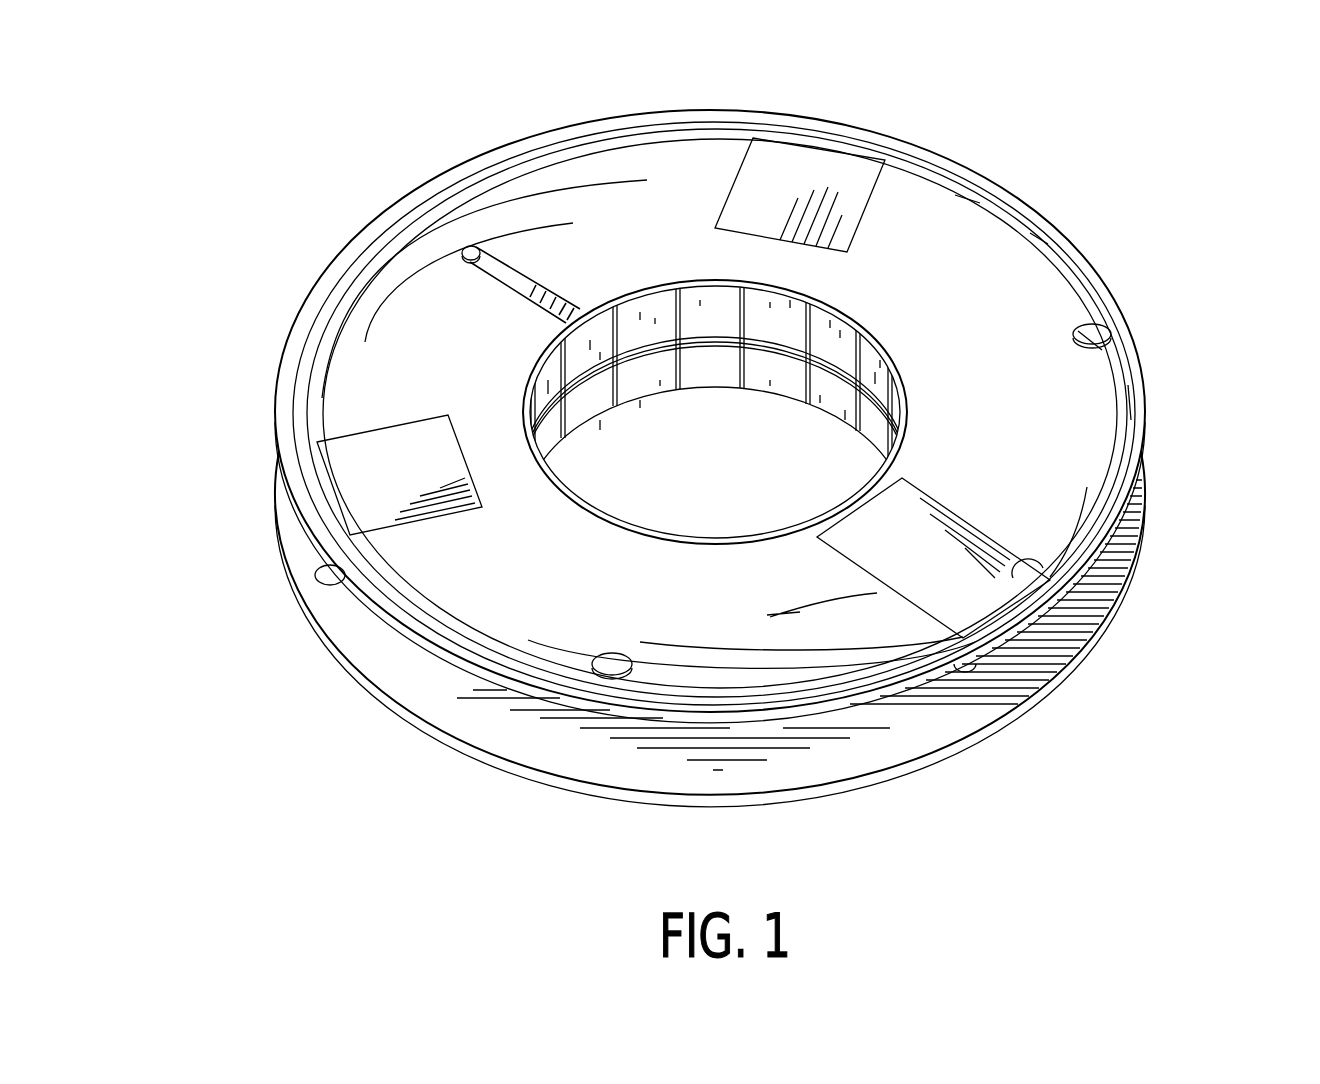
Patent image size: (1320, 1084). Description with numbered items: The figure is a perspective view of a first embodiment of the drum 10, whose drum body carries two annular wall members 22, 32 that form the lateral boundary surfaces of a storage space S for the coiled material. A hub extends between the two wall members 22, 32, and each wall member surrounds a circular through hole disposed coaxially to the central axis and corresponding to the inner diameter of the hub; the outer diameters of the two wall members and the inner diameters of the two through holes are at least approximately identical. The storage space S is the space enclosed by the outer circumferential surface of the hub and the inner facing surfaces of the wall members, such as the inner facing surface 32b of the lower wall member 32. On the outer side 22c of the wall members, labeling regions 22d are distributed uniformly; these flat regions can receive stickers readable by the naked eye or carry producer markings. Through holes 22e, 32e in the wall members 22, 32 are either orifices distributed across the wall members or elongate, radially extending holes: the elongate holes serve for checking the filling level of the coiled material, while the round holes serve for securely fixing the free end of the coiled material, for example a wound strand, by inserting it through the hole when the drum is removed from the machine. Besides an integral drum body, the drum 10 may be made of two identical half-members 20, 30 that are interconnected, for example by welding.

The drum 10 is at (365, 148).
The half-member 20 is at (1067, 160).
The annular wall member 22 is at (1062, 270).
The outer side 22c is at (740, 697).
The labeling regions 22d is at (818, 168).
The through holes 22e is at (1096, 330).
The half-member 30 is at (972, 770).
The annular wall member 32 is at (1068, 652).
The inner facing surface 32b is at (850, 755).
The through holes 32e is at (337, 592).
The storage space S is at (492, 712).